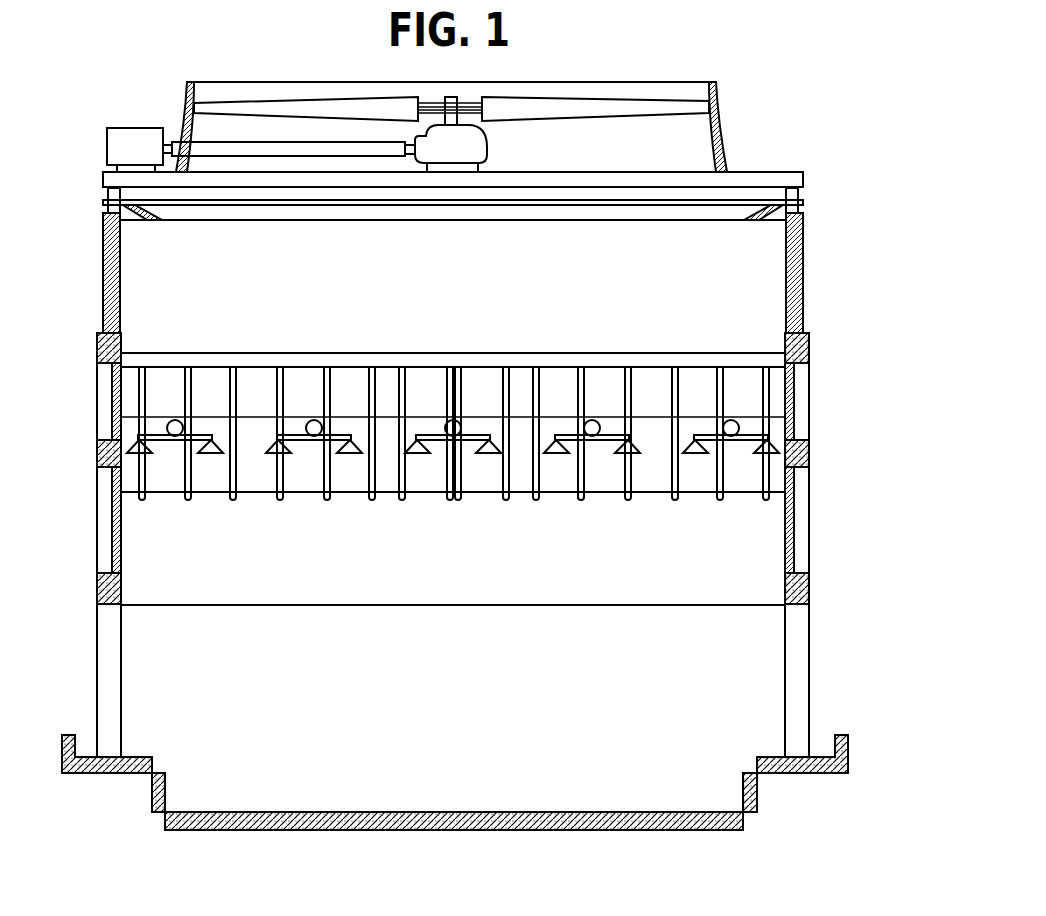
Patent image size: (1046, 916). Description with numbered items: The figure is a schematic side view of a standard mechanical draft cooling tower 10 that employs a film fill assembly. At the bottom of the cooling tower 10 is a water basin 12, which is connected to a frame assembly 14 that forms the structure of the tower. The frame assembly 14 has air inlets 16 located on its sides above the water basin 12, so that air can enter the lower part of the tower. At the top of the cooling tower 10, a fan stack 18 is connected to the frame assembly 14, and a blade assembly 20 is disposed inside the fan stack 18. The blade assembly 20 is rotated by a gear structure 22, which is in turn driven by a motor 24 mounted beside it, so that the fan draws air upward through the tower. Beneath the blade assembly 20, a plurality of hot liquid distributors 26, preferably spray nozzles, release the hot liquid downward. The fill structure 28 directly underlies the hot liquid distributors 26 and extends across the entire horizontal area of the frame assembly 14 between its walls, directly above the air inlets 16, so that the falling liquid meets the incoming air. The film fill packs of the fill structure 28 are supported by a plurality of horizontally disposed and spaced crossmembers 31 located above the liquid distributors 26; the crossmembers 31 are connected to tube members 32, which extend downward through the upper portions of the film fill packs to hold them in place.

The cooling tower 10 is at (818, 78).
The water basin 12 is at (698, 832).
The frame assembly 14 is at (97, 700).
The air inlets 16 is at (170, 673).
The fan stack 18 is at (719, 131).
The blade assembly 20 is at (510, 130).
The gear structure 22 is at (451, 143).
The motor 24 is at (107, 148).
The hot liquid distributors 26 is at (297, 435).
The fill structure 28 is at (466, 569).
The crossmembers 31 is at (313, 355).
The tube members 32 is at (462, 410).